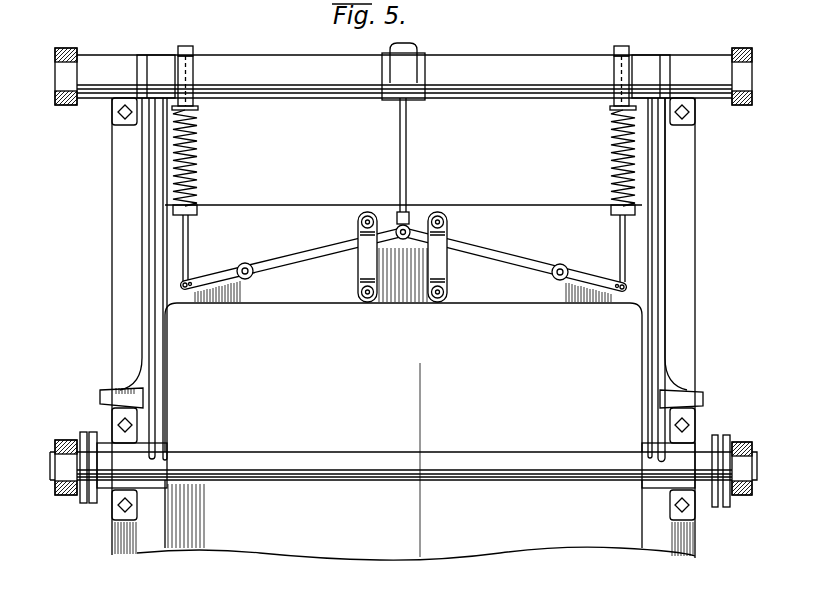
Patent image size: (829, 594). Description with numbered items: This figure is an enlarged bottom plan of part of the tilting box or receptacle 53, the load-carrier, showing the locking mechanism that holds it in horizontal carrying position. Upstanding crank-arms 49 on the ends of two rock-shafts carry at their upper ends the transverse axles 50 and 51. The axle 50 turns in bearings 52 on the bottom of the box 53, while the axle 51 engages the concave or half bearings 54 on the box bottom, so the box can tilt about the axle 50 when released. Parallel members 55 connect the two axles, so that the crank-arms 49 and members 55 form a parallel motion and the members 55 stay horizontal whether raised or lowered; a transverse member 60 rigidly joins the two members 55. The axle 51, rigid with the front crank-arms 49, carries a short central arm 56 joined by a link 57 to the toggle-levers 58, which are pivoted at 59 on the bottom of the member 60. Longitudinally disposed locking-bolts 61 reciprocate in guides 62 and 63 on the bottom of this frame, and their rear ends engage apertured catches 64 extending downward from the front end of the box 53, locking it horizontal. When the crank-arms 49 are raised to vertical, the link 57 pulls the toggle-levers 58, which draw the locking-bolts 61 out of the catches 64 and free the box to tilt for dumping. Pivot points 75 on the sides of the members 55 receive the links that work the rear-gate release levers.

The crank-arms 49 is at (62, 100).
The axle 50 is at (485, 455).
The axle 51 is at (501, 68).
The bearings 52 is at (107, 443).
The box or receptacle 53 is at (412, 548).
The concave or half bearings 54 is at (108, 57).
The parallel members 55 is at (143, 258).
The arm 56 is at (418, 46).
The link 57 is at (400, 140).
The toggle-levers 58 is at (295, 256).
The pivot 59 is at (245, 281).
The transverse member 60 is at (417, 290).
The locking-bolts 61 is at (190, 243).
The guide 62 is at (198, 210).
The guide 63 is at (195, 72).
The apertured catches 64 is at (190, 47).
The pivot points 75 is at (108, 394).